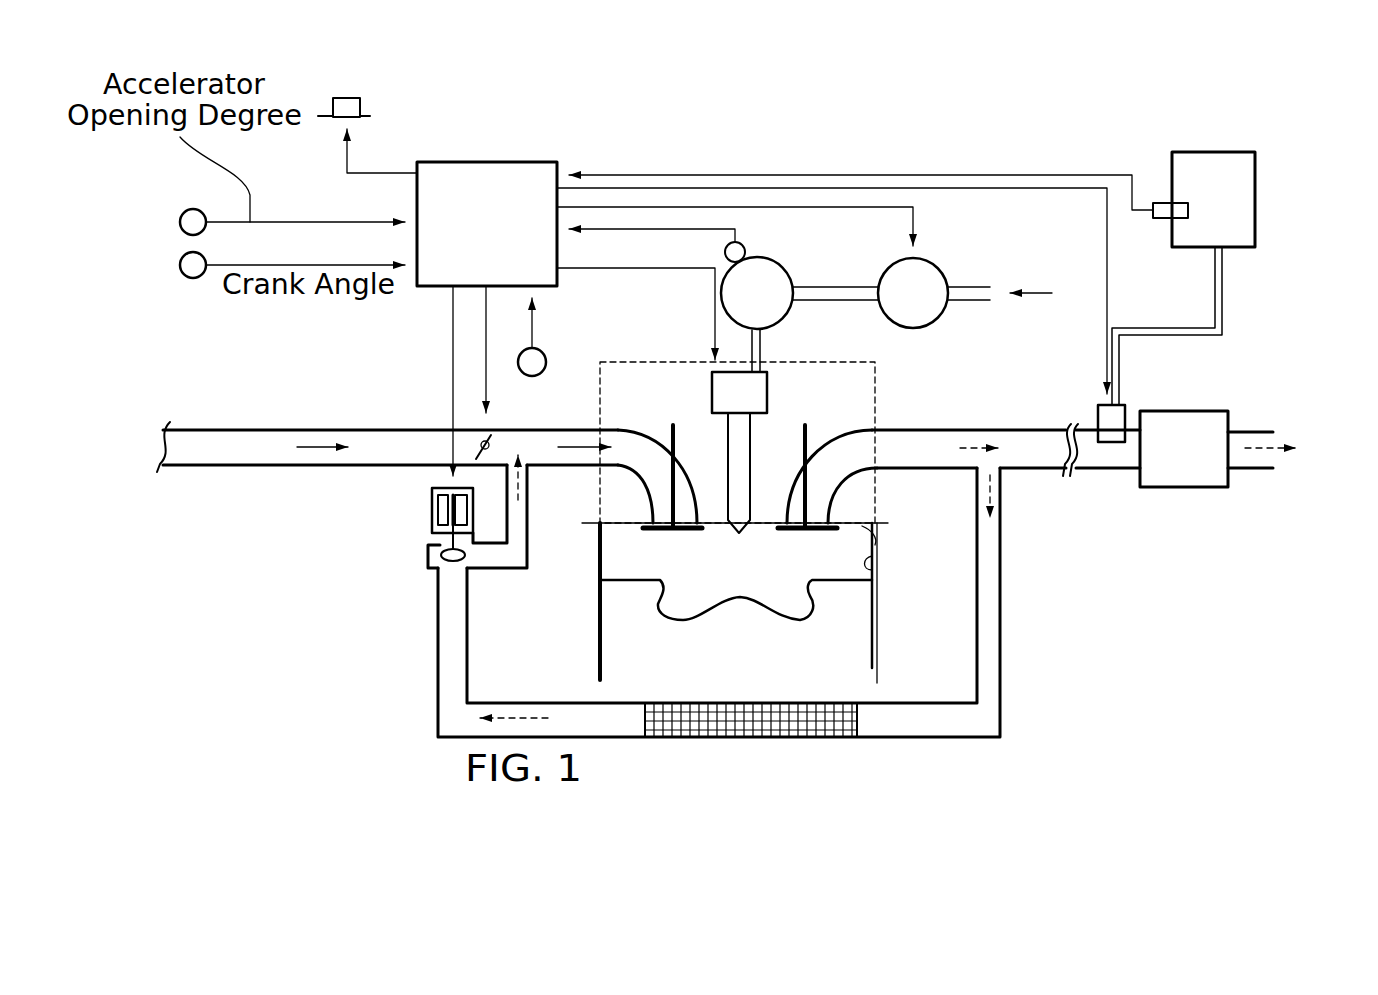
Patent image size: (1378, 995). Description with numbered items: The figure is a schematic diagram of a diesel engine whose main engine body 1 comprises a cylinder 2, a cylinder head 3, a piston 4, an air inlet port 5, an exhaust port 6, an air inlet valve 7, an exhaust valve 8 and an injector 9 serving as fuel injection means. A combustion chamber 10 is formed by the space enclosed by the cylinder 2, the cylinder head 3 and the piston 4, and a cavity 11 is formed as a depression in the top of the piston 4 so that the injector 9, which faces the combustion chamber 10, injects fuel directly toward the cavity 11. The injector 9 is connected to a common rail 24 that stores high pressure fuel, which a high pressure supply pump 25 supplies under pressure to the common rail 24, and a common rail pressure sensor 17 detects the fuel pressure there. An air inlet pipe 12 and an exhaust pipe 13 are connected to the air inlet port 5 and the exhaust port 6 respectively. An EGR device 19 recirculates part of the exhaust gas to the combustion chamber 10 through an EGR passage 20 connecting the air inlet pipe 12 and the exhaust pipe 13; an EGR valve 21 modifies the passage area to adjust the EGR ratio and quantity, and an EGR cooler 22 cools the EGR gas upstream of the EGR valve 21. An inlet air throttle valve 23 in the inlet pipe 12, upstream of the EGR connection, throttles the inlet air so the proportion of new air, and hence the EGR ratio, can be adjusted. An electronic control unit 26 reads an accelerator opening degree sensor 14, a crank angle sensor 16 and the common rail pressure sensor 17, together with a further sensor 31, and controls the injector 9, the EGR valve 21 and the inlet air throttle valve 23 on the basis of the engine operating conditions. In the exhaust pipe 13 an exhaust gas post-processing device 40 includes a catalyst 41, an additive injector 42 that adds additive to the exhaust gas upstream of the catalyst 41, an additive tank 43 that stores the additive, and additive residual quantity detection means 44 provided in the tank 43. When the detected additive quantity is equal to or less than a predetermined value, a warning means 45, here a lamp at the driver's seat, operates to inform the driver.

The main engine body 1 is at (571, 622).
The cylinder 2 is at (875, 568).
The cylinder head 3 is at (876, 543).
The piston 4 is at (830, 630).
The air inlet port 5 is at (652, 478).
The exhaust port 6 is at (837, 477).
The air inlet valve 7 is at (668, 428).
The exhaust valve 8 is at (808, 438).
The injector 9 is at (733, 395).
The combustion chamber 10 is at (622, 560).
The cavity 11 is at (763, 600).
The air inlet pipe 12 is at (310, 467).
The exhaust pipe 13 is at (1038, 430).
The accelerator opening degree sensor 14 is at (182, 210).
The crank angle sensor 16 is at (182, 253).
The common rail pressure sensor 17 is at (725, 250).
The EGR device 19 is at (392, 575).
The EGR passage 20 is at (922, 738).
The EGR valve 21 is at (433, 488).
The EGR cooler 22 is at (760, 730).
The inlet air throttle valve 23 is at (480, 443).
The common rail 24 is at (728, 300).
The high pressure supply pump 25 is at (943, 312).
The electronic control unit 26 is at (487, 160).
The sensor 31 is at (535, 370).
The exhaust gas post-processing device 40 is at (1305, 260).
The catalyst 41 is at (1200, 428).
The additive injector 42 is at (1115, 420).
The additive tank 43 is at (1212, 165).
The additive residual quantity detection means 44 is at (1172, 207).
The warning means 45 is at (352, 98).